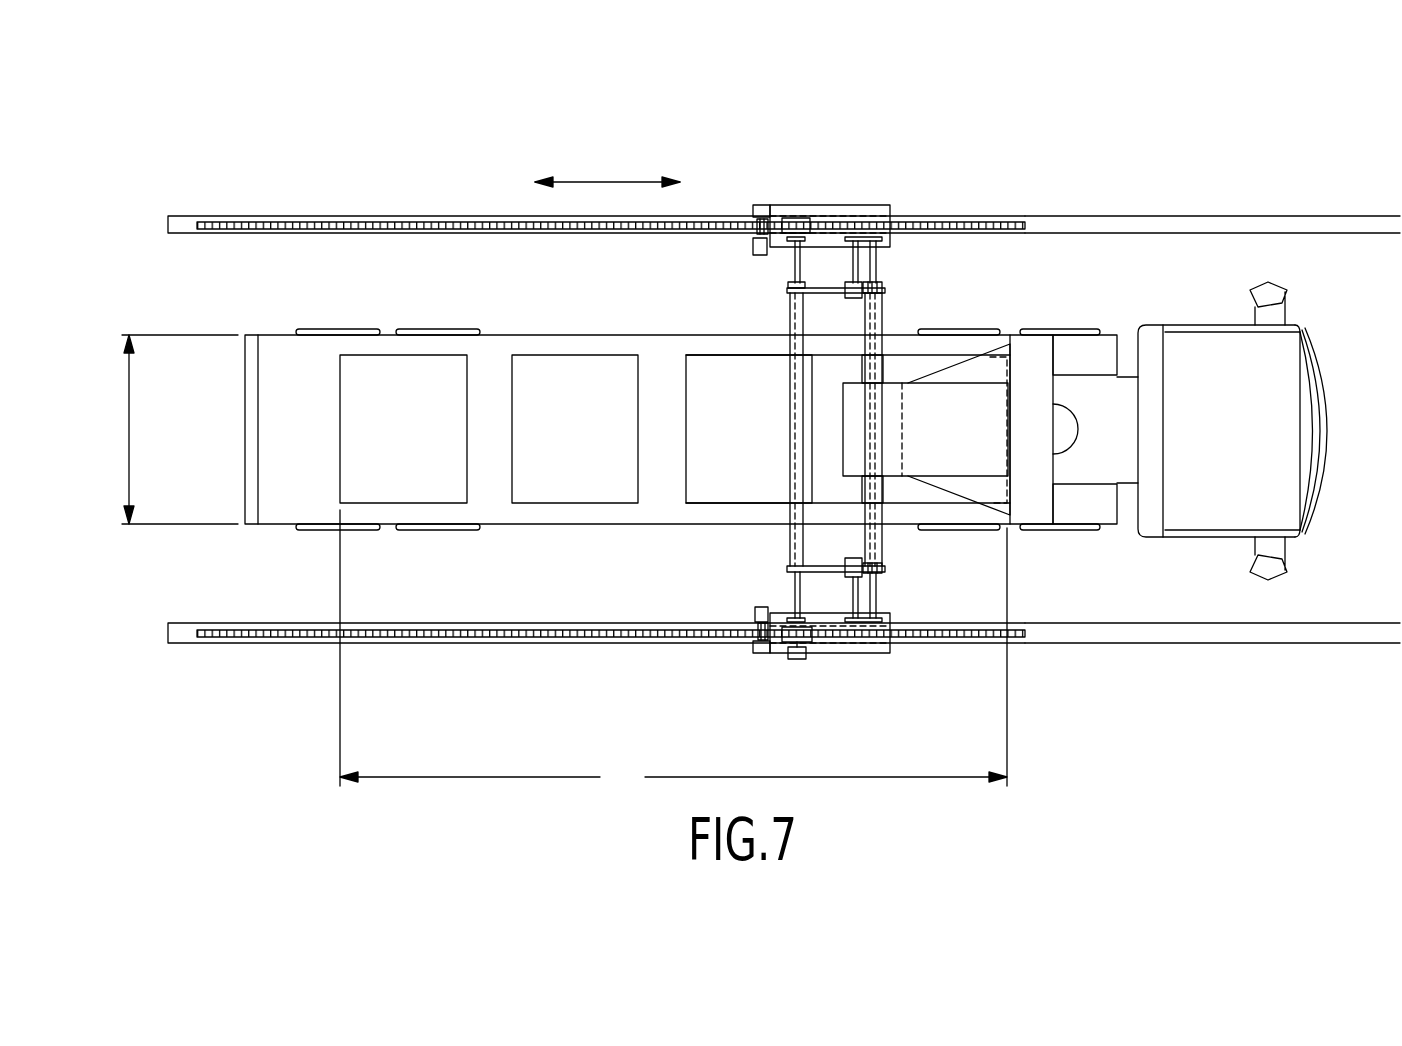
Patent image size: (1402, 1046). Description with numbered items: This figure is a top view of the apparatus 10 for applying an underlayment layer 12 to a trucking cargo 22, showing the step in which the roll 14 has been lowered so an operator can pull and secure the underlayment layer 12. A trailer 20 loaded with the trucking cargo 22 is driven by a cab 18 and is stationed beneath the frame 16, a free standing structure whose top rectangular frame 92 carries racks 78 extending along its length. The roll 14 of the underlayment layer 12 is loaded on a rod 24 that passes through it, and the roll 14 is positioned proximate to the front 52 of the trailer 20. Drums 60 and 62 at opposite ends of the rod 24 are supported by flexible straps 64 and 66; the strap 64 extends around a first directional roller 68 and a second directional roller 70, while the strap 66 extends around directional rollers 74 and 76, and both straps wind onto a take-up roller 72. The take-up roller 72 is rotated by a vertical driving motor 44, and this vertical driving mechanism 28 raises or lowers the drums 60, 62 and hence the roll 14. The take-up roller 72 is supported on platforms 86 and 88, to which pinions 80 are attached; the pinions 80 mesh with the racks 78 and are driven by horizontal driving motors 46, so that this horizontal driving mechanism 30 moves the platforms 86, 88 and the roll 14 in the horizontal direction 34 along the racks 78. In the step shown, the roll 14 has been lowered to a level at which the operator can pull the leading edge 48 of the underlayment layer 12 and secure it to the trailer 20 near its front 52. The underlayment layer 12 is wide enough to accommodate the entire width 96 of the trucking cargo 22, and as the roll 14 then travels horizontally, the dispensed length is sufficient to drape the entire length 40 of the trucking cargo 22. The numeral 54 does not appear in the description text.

The apparatus 10 is at (510, 127).
The underlayment layer 12 is at (1000, 350).
The roll 14 is at (892, 413).
The frame 16 is at (265, 207).
The cab 18 is at (1290, 365).
The trailer 20 is at (280, 545).
The trucking cargo 22 is at (372, 352).
The rod 24 is at (868, 452).
The vertical driving mechanism 28 is at (830, 272).
The horizontal driving mechanism 30 is at (698, 660).
The horizontal direction 34 is at (612, 182).
The length 40 is at (673, 653).
The vertical driving motor 44 is at (797, 660).
The horizontal driving motors 46 is at (760, 250).
The leading edge 48 is at (1010, 490).
The front 52 is at (1058, 358).
The front wall 54 is at (245, 420).
The drum 60 is at (883, 543).
The drum 62 is at (885, 315).
The strap 64 is at (818, 565).
The strap 66 is at (817, 293).
The first directional roller 68 is at (858, 572).
The second directional roller 70 is at (880, 573).
The take-up roller 72 is at (793, 480).
The directional roller 74 is at (860, 280).
The directional roller 76 is at (880, 284).
The racks 78 is at (500, 215).
The pinions 80 is at (760, 220).
The platform 86 is at (885, 650).
The platform 88 is at (882, 207).
The top rectangular frame 92 is at (1310, 215).
The width 96 is at (175, 429).